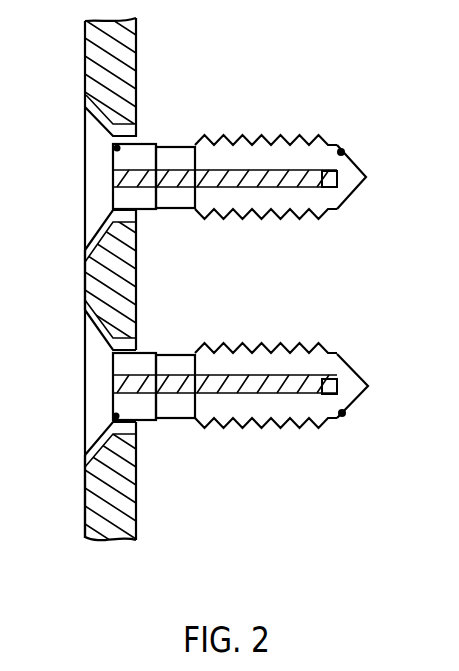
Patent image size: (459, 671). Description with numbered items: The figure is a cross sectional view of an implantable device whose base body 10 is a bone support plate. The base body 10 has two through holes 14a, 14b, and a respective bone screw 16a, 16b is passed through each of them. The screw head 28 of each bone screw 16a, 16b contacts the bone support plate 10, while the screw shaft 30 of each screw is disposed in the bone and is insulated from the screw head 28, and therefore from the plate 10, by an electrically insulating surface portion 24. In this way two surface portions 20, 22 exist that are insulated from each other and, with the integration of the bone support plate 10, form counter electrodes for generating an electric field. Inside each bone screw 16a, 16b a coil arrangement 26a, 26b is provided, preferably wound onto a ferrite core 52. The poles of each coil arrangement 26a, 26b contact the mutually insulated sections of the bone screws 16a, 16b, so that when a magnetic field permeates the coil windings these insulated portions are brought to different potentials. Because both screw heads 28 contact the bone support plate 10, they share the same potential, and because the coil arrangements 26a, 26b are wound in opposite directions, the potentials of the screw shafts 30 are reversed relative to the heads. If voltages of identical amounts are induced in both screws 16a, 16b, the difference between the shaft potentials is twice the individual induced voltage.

The base body 10 is at (75, 278).
The through hole 14a is at (85, 460).
The through hole 14b is at (85, 252).
The bone screw 16a is at (347, 402).
The bone screw 16b is at (347, 192).
The surface portion 20 is at (85, 195).
The surface portion 22 is at (352, 160).
The electrically insulating surface portion 24 is at (178, 146).
The coil arrangement 26a is at (233, 400).
The coil arrangement 26b is at (245, 187).
The screw head 28 is at (85, 152).
The screw shaft 30 is at (248, 136).
The ferrite core 52 is at (338, 178).